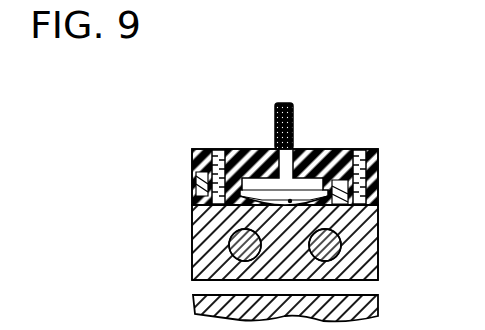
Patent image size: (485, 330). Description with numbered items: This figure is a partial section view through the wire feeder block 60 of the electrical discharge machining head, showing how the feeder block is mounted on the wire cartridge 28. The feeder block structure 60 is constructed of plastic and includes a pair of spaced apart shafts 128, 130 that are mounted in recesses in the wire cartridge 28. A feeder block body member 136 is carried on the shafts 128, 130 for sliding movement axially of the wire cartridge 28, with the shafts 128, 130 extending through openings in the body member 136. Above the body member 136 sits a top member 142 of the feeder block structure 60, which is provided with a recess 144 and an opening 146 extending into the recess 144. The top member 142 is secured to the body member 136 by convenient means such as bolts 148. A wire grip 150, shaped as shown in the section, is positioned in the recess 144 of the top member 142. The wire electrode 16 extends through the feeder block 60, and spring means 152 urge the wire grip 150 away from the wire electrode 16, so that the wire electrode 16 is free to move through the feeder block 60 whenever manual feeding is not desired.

The wire feeder block 60 is at (361, 148).
The wire electrode 16 is at (378, 227).
The shaft 128 is at (193, 232).
The feeder block body member 136 is at (196, 268).
The shaft 130 is at (341, 247).
The bolts 148 is at (193, 163).
The spring means 152 is at (378, 162).
The recess 144 is at (195, 182).
The top member 142 is at (378, 188).
The opening 146 is at (278, 149).
The wire grip 150 is at (318, 162).
The wire cartridge 28 is at (376, 303).